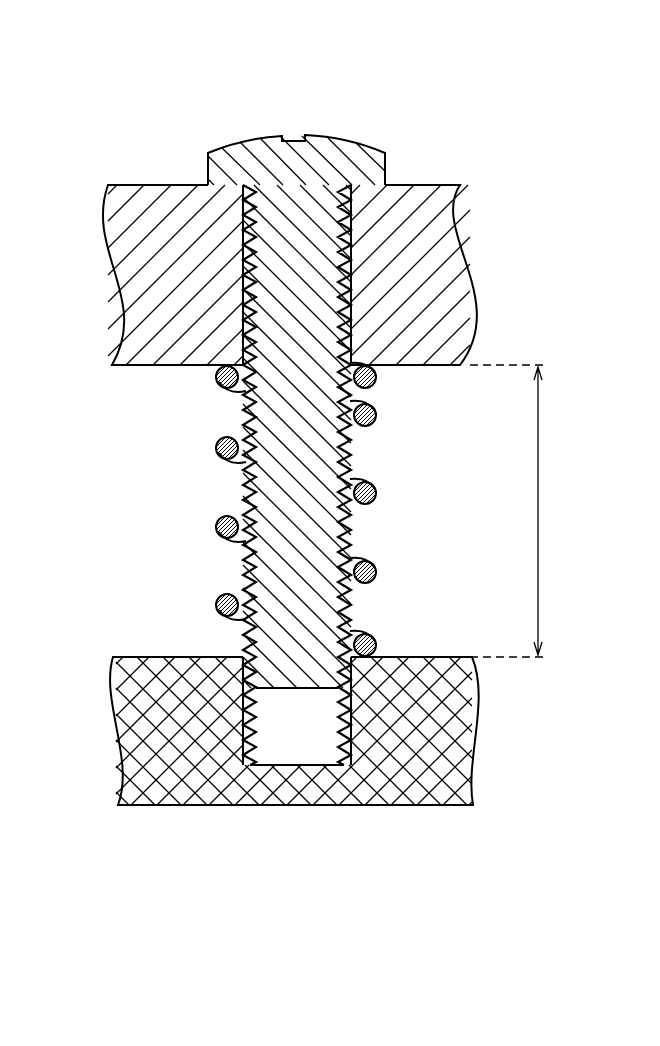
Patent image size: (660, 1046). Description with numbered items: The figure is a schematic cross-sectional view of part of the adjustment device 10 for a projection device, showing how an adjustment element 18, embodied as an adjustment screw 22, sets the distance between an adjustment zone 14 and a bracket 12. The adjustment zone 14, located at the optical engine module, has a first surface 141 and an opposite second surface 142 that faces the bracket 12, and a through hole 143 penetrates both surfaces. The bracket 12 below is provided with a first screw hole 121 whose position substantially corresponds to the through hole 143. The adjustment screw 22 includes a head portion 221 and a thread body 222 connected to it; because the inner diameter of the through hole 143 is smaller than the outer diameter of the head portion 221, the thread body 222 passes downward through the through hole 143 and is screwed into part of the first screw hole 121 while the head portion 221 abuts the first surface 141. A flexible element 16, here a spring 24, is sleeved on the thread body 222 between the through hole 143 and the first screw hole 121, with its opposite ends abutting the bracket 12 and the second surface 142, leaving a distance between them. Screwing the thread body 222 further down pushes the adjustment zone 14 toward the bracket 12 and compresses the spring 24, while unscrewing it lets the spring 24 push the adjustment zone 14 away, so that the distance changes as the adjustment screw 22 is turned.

The adjustment device 10 is at (43, 90).
The bracket 12 is at (153, 733).
The first screw hole 121 is at (297, 745).
The adjustment zone 14 is at (153, 270).
The first surface 141 is at (149, 172).
The second surface 142 is at (152, 380).
The through hole 143 is at (243, 315).
The flexible element 16 is at (363, 509).
The adjustment element 18 is at (312, 406).
The adjustment screw 22 is at (228, 124).
The head portion 221 is at (312, 138).
The thread body 222 is at (307, 447).
The spring 24 is at (377, 572).